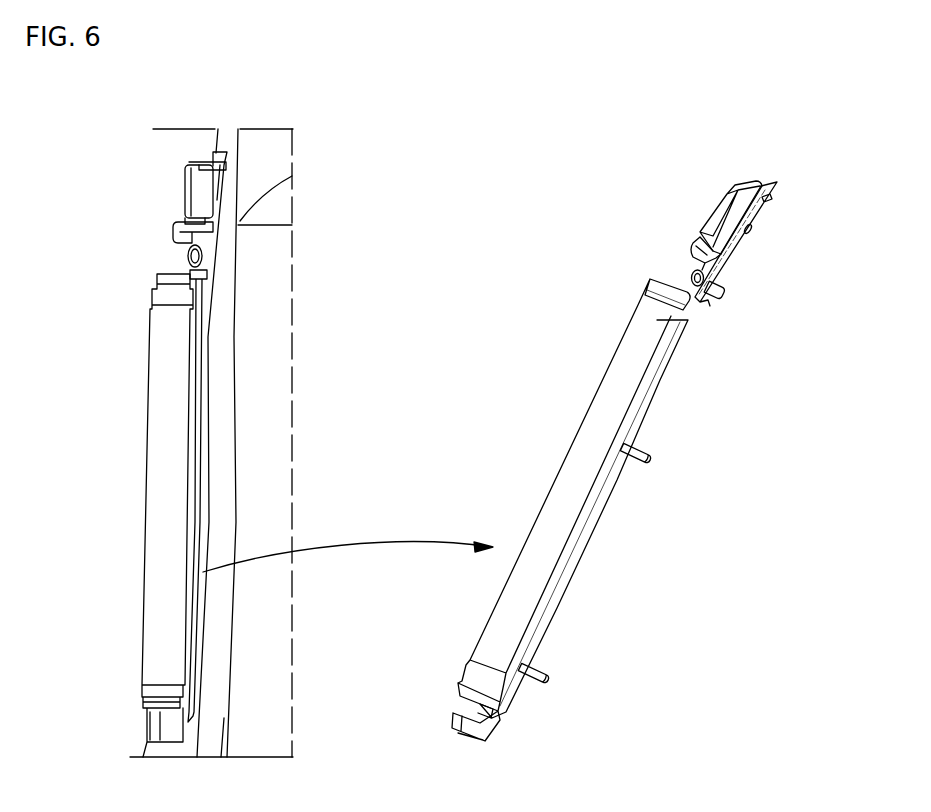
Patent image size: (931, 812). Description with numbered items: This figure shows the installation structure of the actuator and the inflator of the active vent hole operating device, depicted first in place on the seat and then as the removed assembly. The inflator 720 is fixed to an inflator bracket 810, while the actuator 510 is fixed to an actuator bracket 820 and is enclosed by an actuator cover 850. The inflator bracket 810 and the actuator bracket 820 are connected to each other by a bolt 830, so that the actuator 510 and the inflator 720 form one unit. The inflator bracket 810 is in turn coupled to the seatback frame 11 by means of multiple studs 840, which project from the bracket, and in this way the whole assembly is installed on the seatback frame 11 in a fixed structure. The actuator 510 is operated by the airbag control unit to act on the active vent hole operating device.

The seatback frame 11 is at (218, 380).
The actuator 510 is at (180, 237).
The inflator 720 is at (163, 505).
The inflator bracket 810 is at (187, 640).
The actuator bracket 820 is at (207, 233).
The bolt 830 is at (189, 258).
The stud 840 is at (650, 462).
The actuator cover 850 is at (188, 193).